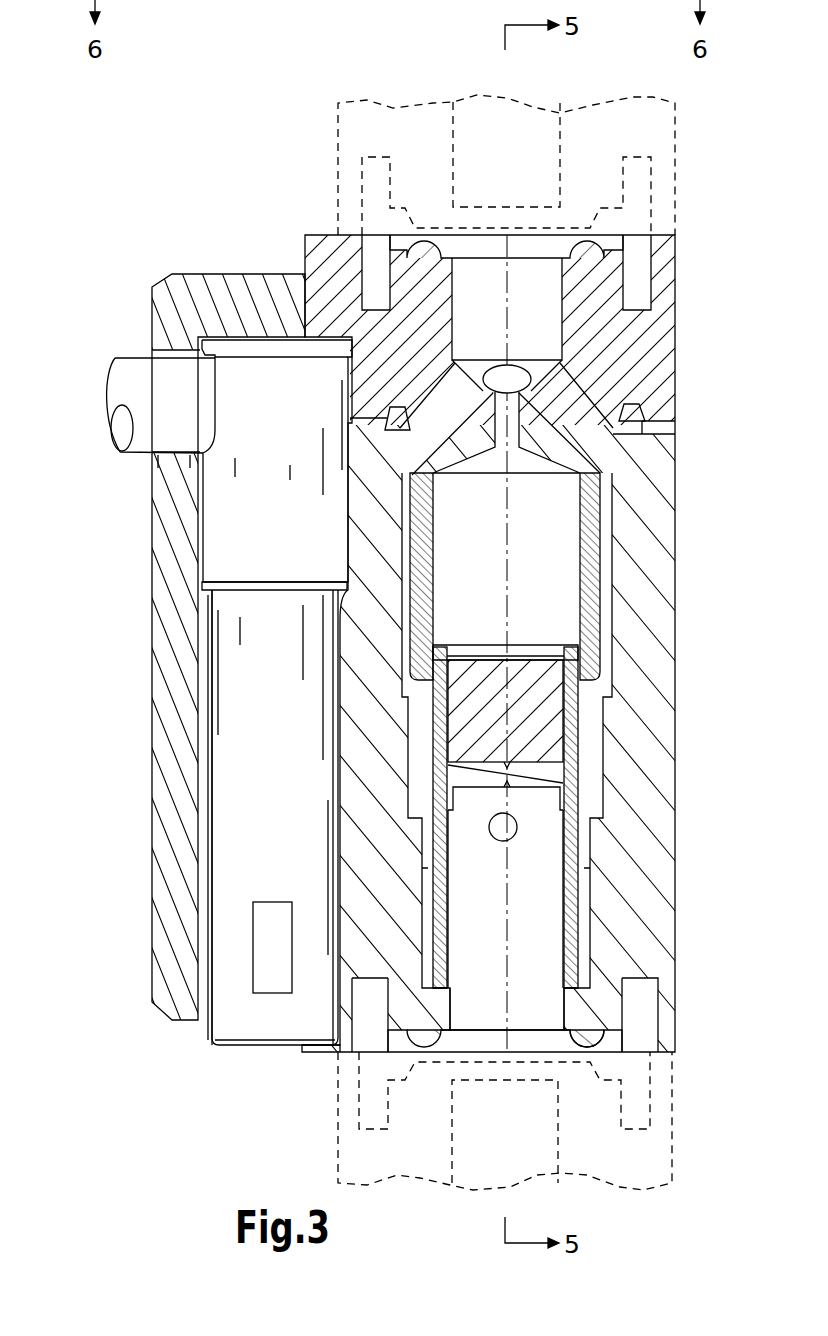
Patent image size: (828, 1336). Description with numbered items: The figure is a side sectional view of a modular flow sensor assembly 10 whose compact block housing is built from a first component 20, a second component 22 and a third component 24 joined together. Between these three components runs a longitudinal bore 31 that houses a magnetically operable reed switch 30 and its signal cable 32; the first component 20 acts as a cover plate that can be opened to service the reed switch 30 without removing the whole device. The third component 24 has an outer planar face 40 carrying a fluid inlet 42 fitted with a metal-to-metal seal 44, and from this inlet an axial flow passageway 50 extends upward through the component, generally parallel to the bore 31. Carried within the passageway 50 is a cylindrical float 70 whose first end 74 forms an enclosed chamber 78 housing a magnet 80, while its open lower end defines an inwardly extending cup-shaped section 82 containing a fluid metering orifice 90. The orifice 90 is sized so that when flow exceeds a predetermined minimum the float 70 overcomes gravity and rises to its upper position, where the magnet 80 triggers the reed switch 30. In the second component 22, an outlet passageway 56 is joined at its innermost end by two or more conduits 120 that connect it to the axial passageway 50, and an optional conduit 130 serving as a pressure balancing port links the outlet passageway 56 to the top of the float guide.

The modular flow sensor assembly 10 is at (484, 668).
The first component 20 is at (162, 600).
The second component 22 is at (665, 337).
The third component 24 is at (667, 618).
The reed switch 30 is at (221, 692).
The bore 31 is at (207, 862).
The signal cable 32 is at (131, 372).
The outer planar face 40 is at (338, 1054).
The fluid inlet 42 is at (523, 1072).
The seal 44 is at (578, 1050).
The axial flow passageway 50 is at (610, 663).
The outlet passageway 56 is at (548, 314).
The float 70 is at (431, 767).
The first end 74 is at (490, 652).
The enclosed chamber 78 is at (534, 650).
The magnet 80 is at (496, 734).
The cup-shaped section 82 is at (546, 939).
The fluid metering orifice 90 is at (510, 840).
The conduits 120 is at (452, 408).
The conduit 130 is at (500, 432).